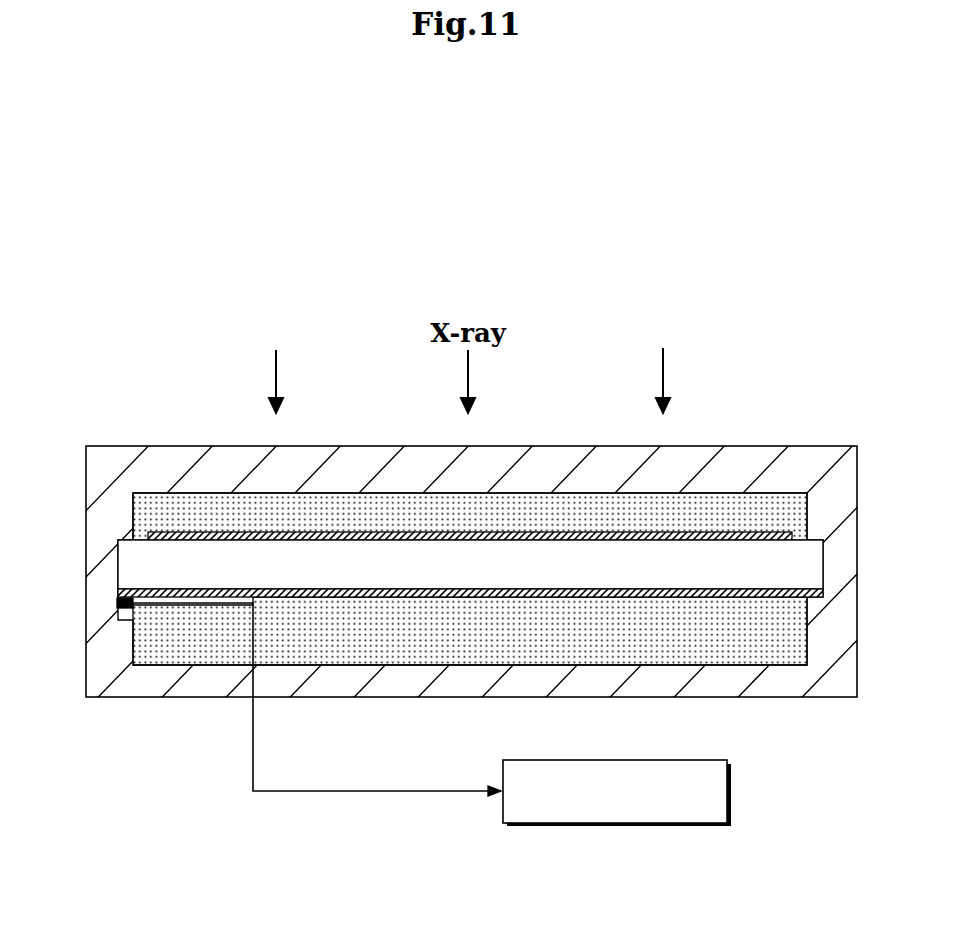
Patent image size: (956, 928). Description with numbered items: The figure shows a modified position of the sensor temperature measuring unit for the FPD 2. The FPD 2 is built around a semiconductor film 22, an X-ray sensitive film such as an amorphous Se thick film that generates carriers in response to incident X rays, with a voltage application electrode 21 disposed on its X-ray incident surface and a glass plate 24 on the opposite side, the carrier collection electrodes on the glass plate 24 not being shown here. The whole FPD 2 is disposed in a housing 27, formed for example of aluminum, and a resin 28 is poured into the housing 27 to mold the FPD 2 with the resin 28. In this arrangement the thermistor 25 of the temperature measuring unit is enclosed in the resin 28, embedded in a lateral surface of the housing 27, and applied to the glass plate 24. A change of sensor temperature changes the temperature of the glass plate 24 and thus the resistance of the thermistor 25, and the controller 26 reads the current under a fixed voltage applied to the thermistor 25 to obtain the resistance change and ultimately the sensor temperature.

The FPD 2 is at (702, 514).
The voltage application electrode 21 is at (221, 535).
The semiconductor film 22 is at (333, 565).
The glass plate 24 is at (304, 598).
The thermistor 25 is at (122, 622).
The controller 26 is at (517, 803).
The housing 27 is at (86, 564).
The resin 28 is at (486, 508).